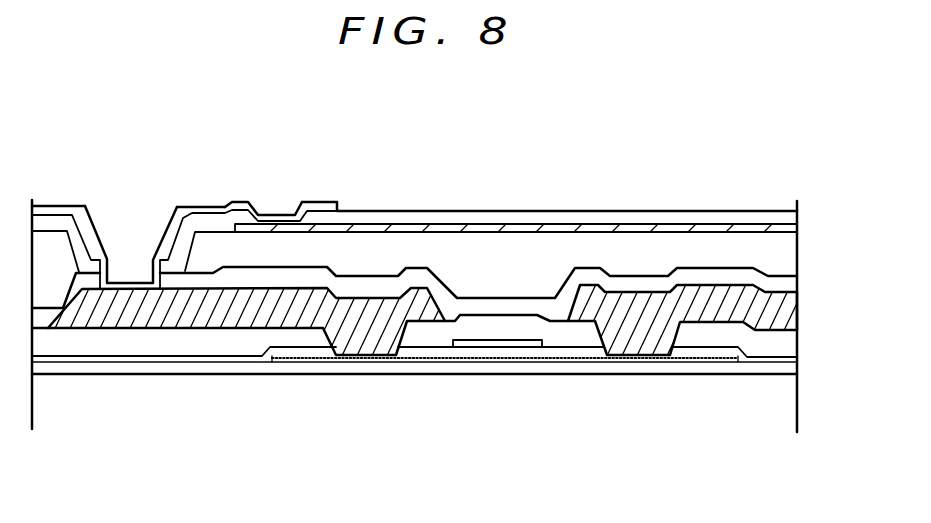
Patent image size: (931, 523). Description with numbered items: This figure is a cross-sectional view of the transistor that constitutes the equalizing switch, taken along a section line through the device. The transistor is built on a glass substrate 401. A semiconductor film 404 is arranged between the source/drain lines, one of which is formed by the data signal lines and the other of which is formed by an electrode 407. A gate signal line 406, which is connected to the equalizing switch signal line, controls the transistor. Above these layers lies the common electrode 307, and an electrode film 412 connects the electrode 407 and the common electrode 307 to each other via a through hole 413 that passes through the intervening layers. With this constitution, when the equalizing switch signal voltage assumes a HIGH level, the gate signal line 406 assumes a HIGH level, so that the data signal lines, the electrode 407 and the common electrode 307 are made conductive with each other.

The glass substrate 401 is at (783, 398).
The semiconductor film 404 is at (580, 360).
The gate signal line 406 is at (496, 347).
The electrode 407 is at (372, 342).
The common electrode 307 is at (446, 223).
The electrode film 412 is at (259, 202).
The through hole 413 is at (129, 236).